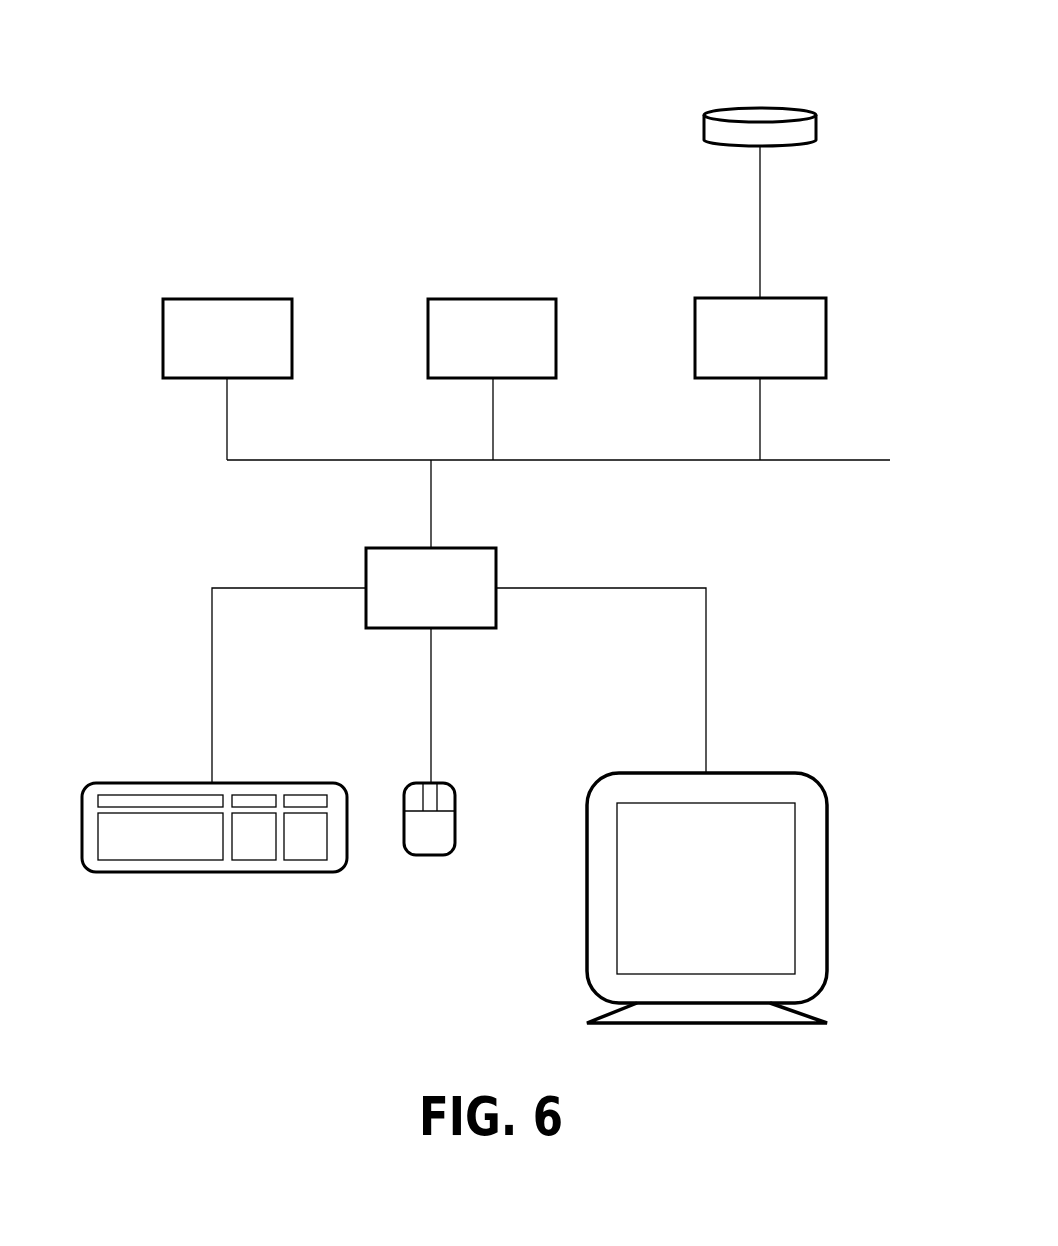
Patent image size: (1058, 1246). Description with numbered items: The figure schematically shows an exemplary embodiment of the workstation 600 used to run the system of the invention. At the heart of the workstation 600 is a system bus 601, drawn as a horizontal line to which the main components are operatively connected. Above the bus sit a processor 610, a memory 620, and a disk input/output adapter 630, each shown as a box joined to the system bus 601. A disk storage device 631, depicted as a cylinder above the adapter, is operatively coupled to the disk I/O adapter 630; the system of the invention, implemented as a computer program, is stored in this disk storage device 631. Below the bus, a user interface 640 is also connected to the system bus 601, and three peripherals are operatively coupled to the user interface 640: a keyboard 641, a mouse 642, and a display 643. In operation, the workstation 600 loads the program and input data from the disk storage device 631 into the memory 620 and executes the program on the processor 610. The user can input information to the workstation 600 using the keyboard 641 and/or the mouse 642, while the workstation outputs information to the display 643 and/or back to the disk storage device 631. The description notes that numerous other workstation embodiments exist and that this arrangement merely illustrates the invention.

The workstation 600 is at (352, 66).
The system bus 601 is at (227, 461).
The processor 610 is at (249, 352).
The memory 620 is at (514, 352).
The disk input/output (I/O) adapter 630 is at (782, 352).
The disk storage device 631 is at (704, 128).
The user interface (UI) 640 is at (453, 602).
The keyboard 641 is at (213, 872).
The mouse 642 is at (431, 855).
The display 643 is at (827, 889).